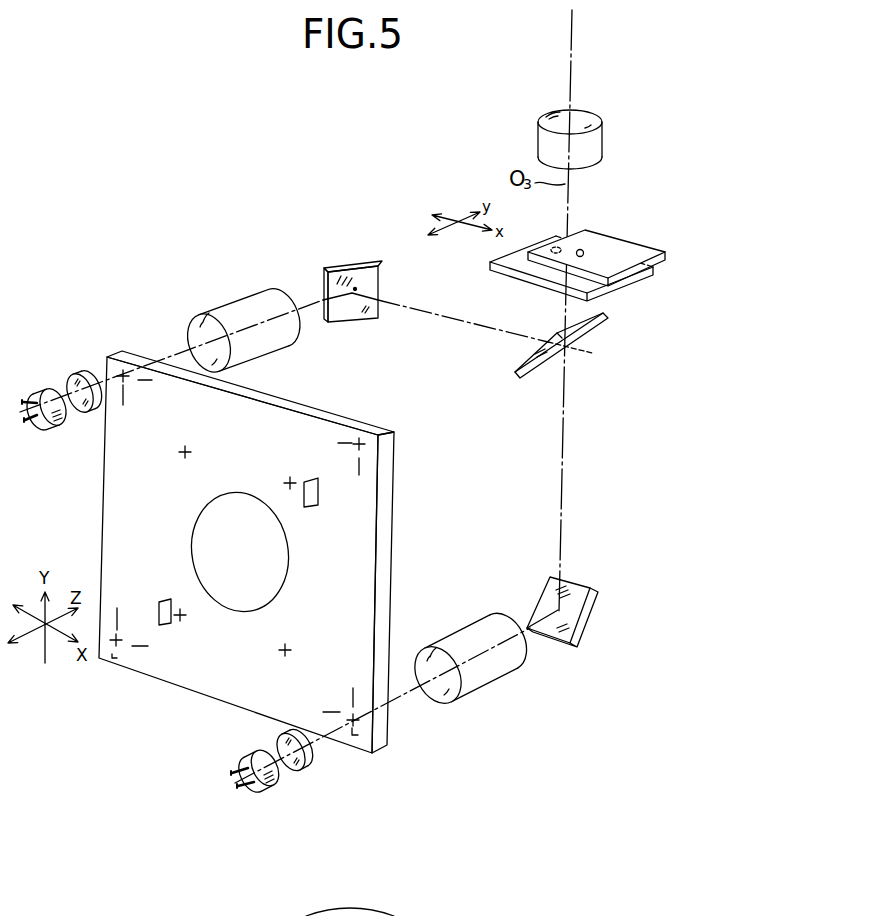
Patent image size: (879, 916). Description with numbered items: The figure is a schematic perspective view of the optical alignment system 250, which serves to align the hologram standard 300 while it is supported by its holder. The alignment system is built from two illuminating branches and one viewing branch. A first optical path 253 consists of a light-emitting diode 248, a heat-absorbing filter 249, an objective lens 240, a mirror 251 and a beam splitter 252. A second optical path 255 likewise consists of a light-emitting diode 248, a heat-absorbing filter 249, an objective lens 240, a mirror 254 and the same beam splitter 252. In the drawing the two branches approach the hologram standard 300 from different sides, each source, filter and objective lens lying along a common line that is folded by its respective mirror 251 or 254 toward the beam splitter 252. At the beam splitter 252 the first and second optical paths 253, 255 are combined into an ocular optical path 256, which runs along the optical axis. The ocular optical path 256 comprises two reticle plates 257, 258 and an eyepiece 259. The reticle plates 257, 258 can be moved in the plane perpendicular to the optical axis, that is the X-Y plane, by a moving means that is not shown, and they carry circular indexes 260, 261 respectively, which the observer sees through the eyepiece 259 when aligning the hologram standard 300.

The objective lens 240 is at (252, 303).
The light-emitting diode 248 is at (47, 387).
The heat-absorbing filter 249 is at (85, 368).
The optical alignment system 250 is at (603, 420).
The mirror 251 is at (357, 278).
The beam splitter 252 is at (580, 341).
The first optical path 253 is at (401, 323).
The mirror 254 is at (577, 620).
The second optical path 255 is at (568, 477).
The ocular optical path 256 is at (584, 192).
The reticle plate 257 is at (642, 247).
The reticle plate 258 is at (507, 273).
The eyepiece 259 is at (592, 112).
The circular index 260 is at (583, 250).
The circular index 261 is at (553, 246).
The hologram standard 300 is at (365, 562).